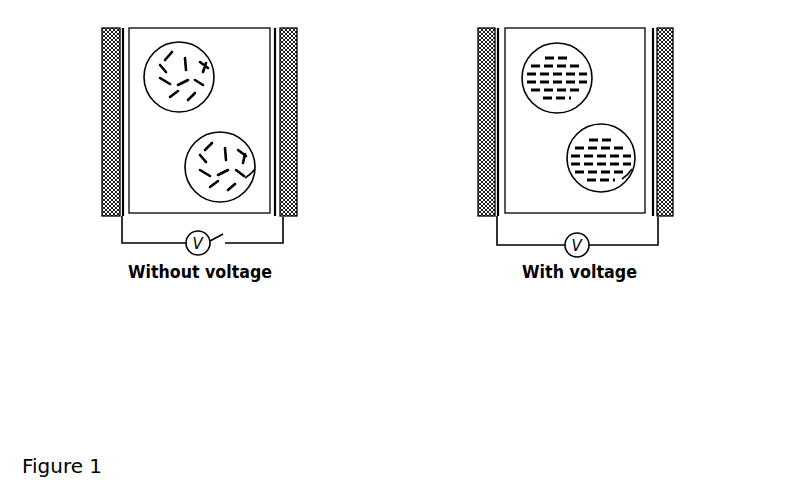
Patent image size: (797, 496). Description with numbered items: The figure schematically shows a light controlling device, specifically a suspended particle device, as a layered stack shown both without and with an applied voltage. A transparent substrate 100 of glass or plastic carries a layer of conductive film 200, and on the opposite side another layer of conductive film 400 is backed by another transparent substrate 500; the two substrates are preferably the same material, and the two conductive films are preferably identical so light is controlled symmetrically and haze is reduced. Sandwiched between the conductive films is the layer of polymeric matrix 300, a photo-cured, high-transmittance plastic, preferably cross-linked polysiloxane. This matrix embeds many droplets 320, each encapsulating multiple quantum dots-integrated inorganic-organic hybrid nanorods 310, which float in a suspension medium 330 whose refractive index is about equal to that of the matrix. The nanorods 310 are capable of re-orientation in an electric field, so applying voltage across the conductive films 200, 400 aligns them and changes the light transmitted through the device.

The transparent substrate 100 is at (106, 49).
The layer of conductive film 200 is at (69, 76).
The layer of polymeric matrix 300 is at (69, 117).
The quantum dots-integrated inorganic-organic hybrid nanorods 310 is at (76, 161).
The droplets 320 is at (71, 194).
The suspension medium 330 is at (247, 178).
The another layer of conductive film 400 is at (658, 102).
The another transparent substrate 500 is at (673, 43).